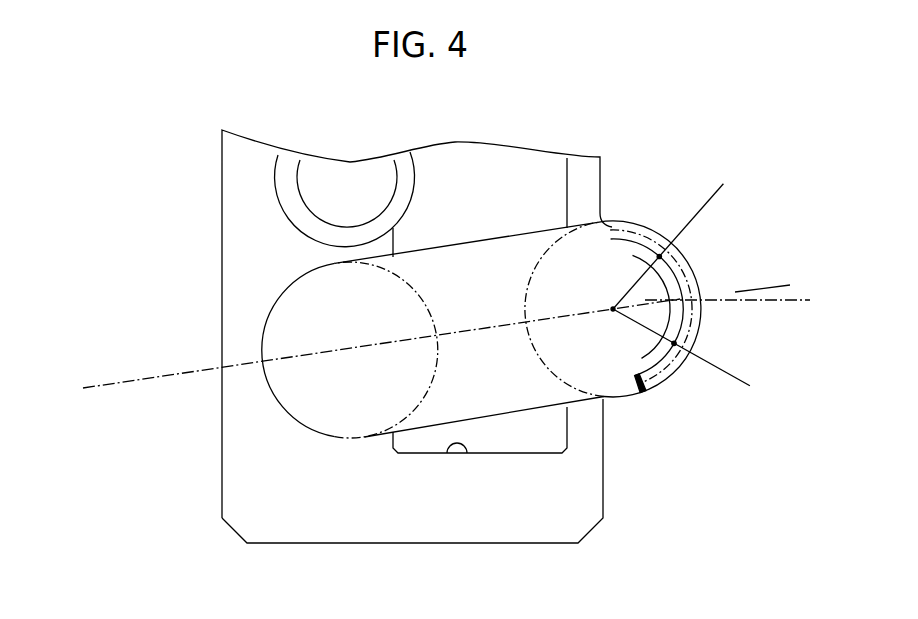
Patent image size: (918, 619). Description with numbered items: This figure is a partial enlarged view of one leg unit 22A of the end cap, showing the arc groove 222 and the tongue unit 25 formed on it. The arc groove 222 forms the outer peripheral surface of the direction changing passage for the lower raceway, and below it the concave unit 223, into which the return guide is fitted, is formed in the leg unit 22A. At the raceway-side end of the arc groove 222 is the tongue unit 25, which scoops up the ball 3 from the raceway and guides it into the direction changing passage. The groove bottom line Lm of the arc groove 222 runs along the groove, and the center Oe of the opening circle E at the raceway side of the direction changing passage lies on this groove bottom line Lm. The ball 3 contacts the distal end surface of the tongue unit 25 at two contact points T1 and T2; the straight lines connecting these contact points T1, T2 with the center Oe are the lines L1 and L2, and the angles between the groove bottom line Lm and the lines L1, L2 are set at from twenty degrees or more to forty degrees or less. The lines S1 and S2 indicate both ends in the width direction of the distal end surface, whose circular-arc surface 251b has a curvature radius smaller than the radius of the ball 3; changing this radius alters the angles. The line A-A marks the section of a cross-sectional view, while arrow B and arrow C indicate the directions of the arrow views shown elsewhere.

The leg unit 22A is at (222, 175).
The arc groove 222 is at (303, 307).
The concave unit 223 is at (467, 460).
The tongue unit 25 is at (639, 393).
The circular-arc surface 251b is at (678, 316).
The ball 3 is at (609, 226).
The opening circle E is at (562, 226).
The groove bottom line Lm is at (150, 380).
The line A- A is at (198, 371).
The arrow B is at (790, 296).
The arrow C is at (747, 285).
The center of opening circle Oe is at (614, 314).
The straight line L1 is at (653, 252).
The contact point T1 is at (661, 256).
The straight line L2 is at (665, 348).
The contact point T2 is at (676, 348).
The line S1 is at (673, 263).
The line S2 is at (688, 350).